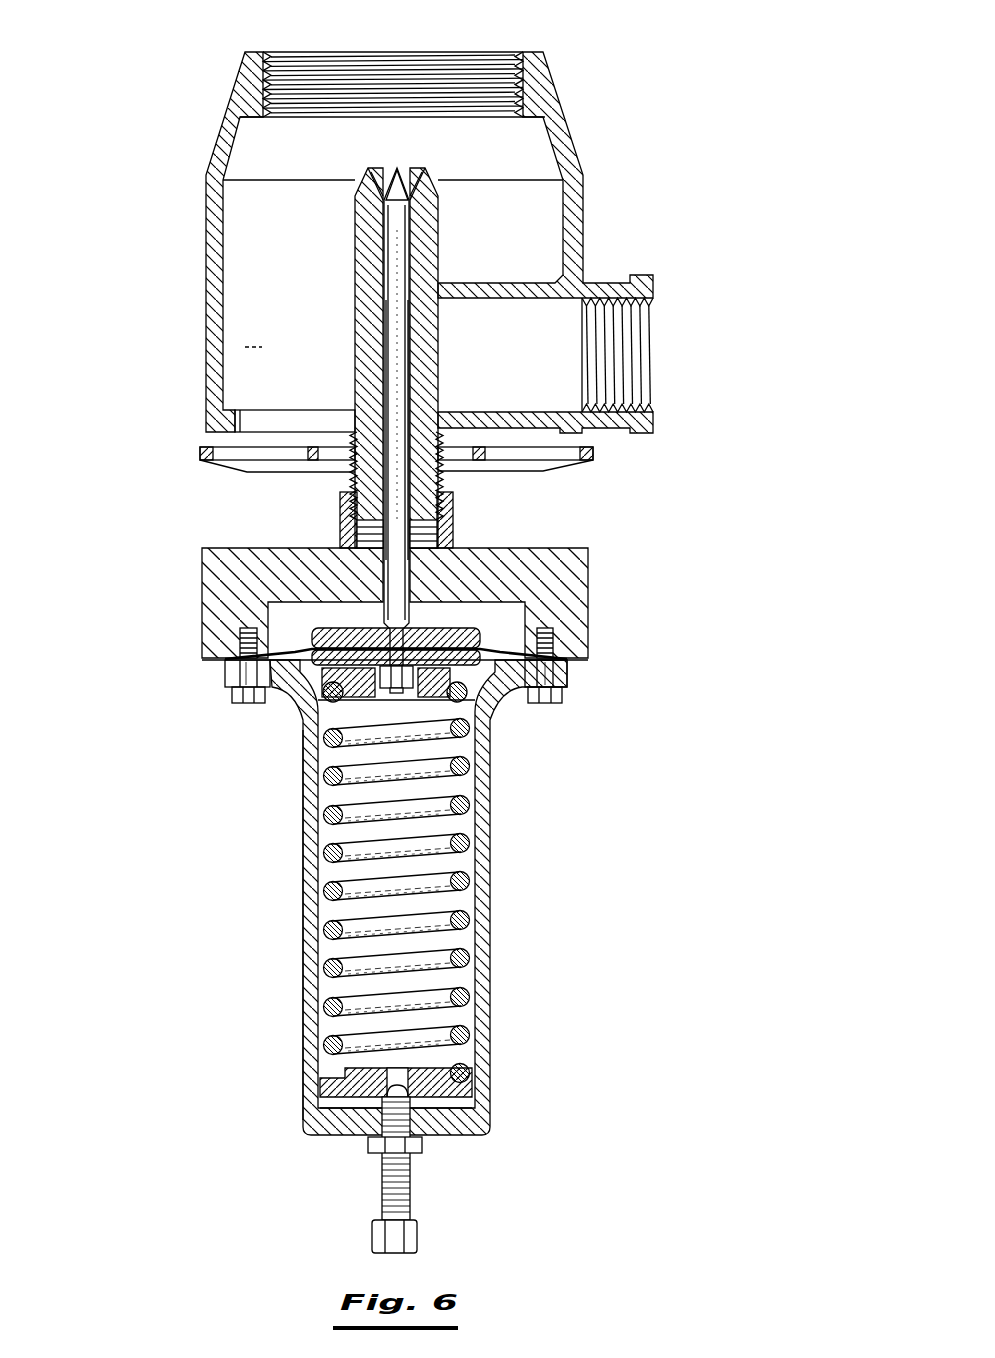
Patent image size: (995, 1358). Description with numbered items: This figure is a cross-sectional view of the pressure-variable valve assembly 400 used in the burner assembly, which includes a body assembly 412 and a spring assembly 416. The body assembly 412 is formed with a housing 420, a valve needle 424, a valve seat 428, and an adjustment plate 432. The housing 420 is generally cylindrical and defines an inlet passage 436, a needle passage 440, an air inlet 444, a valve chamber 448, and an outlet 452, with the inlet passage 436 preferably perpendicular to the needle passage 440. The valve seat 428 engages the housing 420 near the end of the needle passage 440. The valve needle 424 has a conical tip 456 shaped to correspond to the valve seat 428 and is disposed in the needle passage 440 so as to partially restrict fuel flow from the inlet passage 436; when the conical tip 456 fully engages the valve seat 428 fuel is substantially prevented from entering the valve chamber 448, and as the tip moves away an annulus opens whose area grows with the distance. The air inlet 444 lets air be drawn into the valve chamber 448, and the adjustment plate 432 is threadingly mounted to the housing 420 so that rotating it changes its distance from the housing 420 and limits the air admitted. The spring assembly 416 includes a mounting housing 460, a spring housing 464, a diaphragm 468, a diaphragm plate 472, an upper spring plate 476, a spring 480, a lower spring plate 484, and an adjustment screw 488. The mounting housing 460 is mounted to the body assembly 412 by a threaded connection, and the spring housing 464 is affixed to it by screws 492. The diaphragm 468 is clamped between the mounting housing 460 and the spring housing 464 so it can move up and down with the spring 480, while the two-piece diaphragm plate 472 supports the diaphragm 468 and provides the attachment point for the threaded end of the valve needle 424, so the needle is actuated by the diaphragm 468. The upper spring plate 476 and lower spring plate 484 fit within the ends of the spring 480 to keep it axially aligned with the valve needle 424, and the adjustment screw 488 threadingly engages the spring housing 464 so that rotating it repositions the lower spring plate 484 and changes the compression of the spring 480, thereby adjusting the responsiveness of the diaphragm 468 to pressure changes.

The valve assembly 400 is at (120, 824).
The body assembly 412 is at (585, 228).
The spring assembly 416 is at (497, 792).
The housing 420 is at (207, 247).
The valve needle 424 is at (398, 339).
The valve seat 428 is at (380, 168).
The adjustment plate 432 is at (557, 460).
The inlet passage 436 is at (565, 352).
The needle passage 440 is at (398, 232).
The air inlet 444 is at (258, 410).
The valve chamber 448 is at (250, 347).
The outlet 452 is at (432, 70).
The conical tip 456 is at (396, 180).
The mounting housing 460 is at (202, 590).
The spring housing 464 is at (303, 988).
The diaphragm 468 is at (493, 648).
The diaphragm plate 472 is at (455, 638).
The upper spring plate 476 is at (440, 697).
The spring 480 is at (440, 908).
The lower spring plate 484 is at (448, 1100).
The adjustment screw 488 is at (413, 1180).
The screws 492 is at (250, 705).